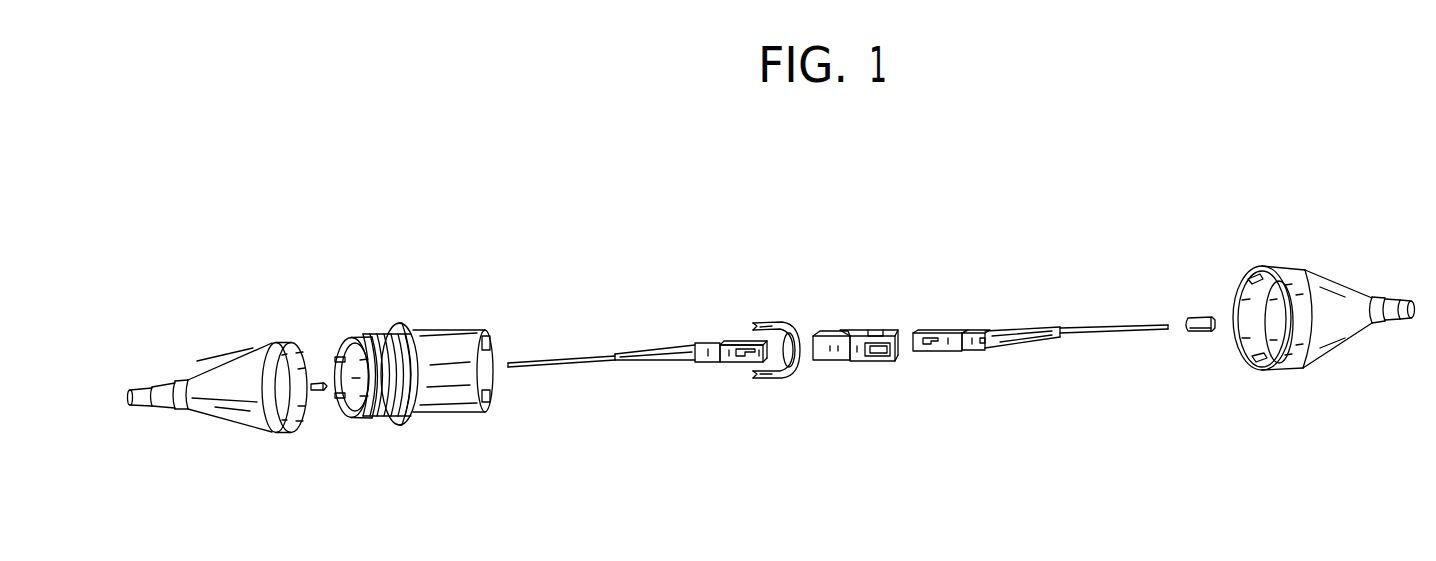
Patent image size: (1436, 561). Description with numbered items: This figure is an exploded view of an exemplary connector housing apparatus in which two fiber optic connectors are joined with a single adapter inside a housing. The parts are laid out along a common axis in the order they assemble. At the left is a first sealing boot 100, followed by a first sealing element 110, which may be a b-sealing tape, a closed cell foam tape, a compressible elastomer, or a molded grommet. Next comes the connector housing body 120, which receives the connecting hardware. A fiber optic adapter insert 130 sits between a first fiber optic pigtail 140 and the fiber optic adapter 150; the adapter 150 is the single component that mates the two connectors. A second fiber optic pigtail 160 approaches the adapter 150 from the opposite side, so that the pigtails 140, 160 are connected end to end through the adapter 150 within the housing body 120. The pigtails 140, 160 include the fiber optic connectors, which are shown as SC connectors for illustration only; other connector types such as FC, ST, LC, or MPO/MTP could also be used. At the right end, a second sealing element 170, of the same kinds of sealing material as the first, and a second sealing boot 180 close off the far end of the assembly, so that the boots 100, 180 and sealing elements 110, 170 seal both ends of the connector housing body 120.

The sealing boot 100 is at (227, 360).
The sealing element 110 is at (313, 380).
The connector housing body 120 is at (440, 327).
The fiber optic adapter insert 130 is at (769, 319).
The fiber optic pigtail 140 is at (663, 368).
The fiber optic adapter 150 is at (858, 330).
The fiber optic pigtail 160 is at (1015, 345).
The sealing element 170 is at (1195, 315).
The sealing boot 180 is at (1348, 340).